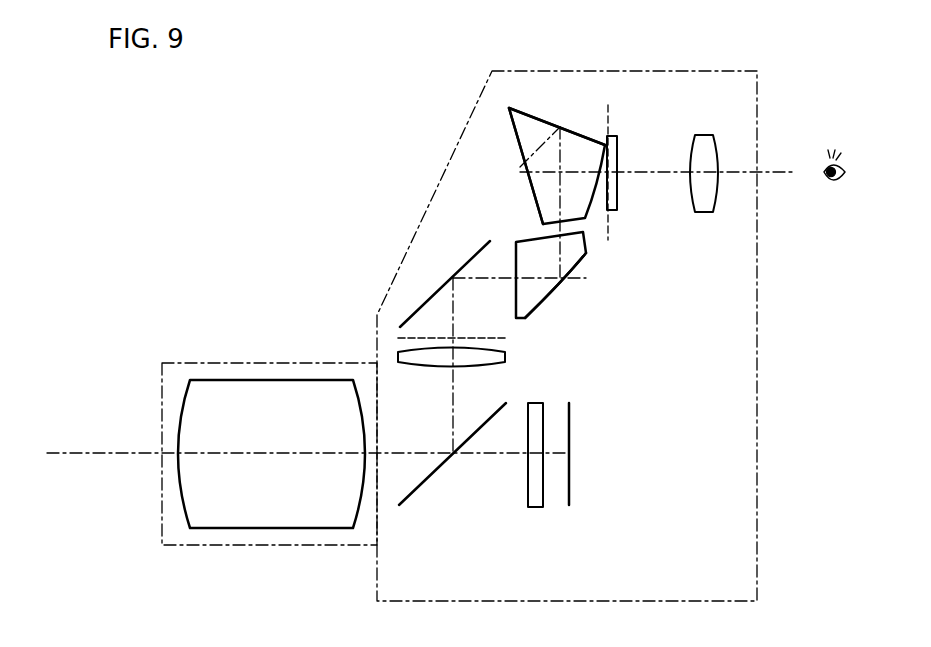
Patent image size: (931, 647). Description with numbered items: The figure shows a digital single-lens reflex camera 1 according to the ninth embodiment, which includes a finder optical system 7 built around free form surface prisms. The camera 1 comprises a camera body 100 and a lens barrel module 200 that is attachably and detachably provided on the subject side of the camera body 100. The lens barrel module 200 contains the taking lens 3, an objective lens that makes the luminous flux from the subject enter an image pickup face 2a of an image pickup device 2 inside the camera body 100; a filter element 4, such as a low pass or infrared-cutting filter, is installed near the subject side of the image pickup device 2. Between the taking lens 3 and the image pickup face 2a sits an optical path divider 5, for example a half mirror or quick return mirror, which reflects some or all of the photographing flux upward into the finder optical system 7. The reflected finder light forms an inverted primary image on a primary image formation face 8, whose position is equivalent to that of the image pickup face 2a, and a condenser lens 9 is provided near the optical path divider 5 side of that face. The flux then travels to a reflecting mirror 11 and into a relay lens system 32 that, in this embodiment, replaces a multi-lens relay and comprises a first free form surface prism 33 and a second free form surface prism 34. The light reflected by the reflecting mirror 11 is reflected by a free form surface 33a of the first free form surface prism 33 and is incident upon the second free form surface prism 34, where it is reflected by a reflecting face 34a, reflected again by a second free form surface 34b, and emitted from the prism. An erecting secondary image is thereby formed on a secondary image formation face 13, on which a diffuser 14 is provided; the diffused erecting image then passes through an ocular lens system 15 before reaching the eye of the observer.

The single-lens reflex camera 1 is at (237, 230).
The camera body 100 is at (757, 423).
The lens barrel module 200 is at (162, 393).
The taking lens 3 is at (240, 380).
The optical path divider 5 is at (403, 500).
The filter element 4 is at (537, 507).
The image pickup device 2 is at (592, 488).
The image pickup face 2a is at (571, 497).
The primary image formation face 8 is at (500, 338).
The condenser lens 9 is at (480, 366).
The reflecting mirror 11 is at (430, 298).
The relay lens system 32 is at (397, 110).
The first free form surface prism 33 is at (530, 252).
The free form surface 33a is at (590, 260).
The second free form surface prism 34 is at (495, 127).
The reflecting face 34a is at (532, 112).
The second free form surface 34b is at (507, 120).
The secondary image formation face 13 is at (607, 107).
The diffuser 14 is at (617, 140).
The ocular lens system 15 is at (713, 150).
The finder optical system 7 is at (694, 265).